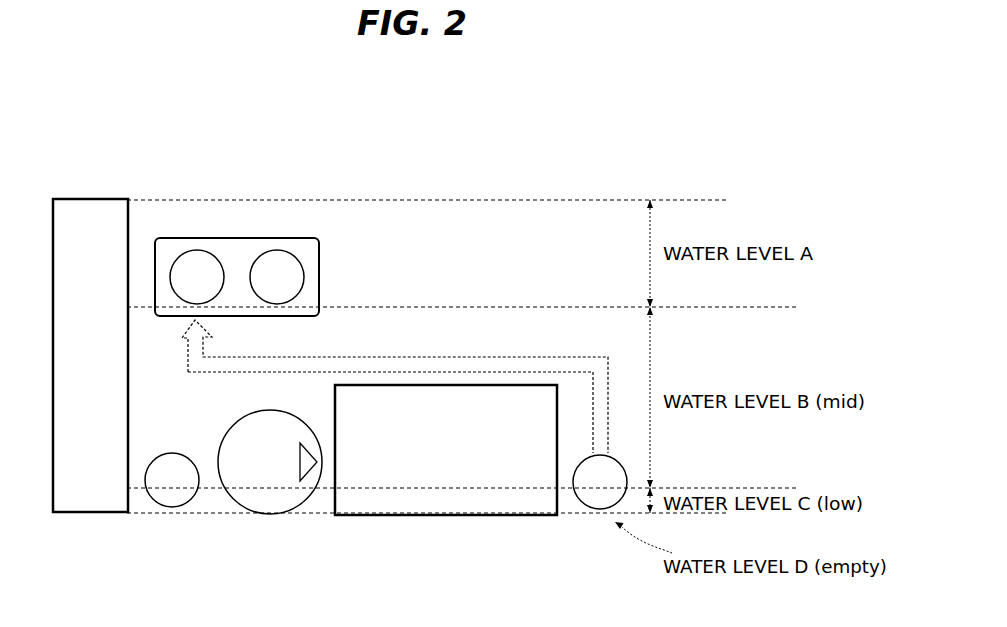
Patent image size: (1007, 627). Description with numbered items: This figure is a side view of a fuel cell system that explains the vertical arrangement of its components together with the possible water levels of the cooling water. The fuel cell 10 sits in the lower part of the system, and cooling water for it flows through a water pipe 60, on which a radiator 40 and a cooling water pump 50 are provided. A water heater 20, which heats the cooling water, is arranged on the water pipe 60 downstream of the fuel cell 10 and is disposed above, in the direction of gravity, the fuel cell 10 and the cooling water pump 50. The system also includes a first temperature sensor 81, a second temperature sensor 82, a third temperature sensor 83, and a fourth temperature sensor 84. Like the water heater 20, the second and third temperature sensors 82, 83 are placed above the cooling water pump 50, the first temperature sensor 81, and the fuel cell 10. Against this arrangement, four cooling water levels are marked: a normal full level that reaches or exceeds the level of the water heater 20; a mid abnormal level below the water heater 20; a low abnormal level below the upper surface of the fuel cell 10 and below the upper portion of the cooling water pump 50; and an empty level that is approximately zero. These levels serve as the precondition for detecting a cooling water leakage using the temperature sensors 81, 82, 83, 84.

The fuel cell 10 is at (437, 497).
The water heater 20 is at (304, 252).
The radiator 40 is at (90, 213).
The cooling water pump 50 is at (270, 497).
The water pipe 60 is at (441, 357).
The first temperature sensor 81 is at (600, 497).
The second temperature sensor 82 is at (181, 266).
The third temperature sensor 83 is at (300, 278).
The fourth temperature sensor 84 is at (172, 495).